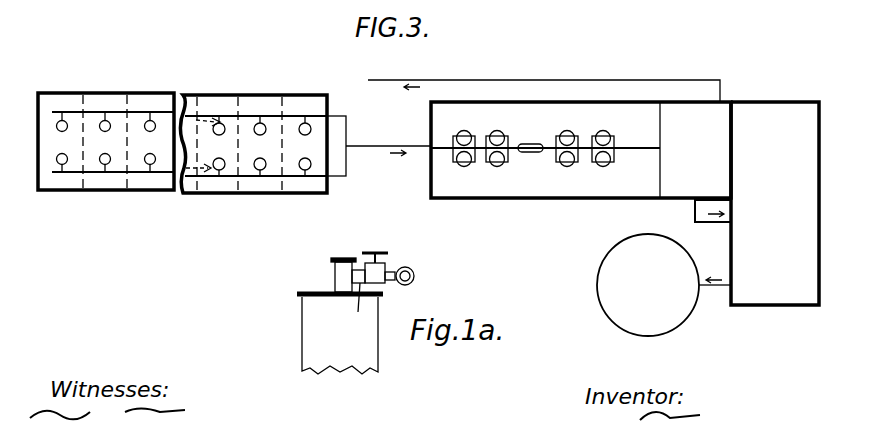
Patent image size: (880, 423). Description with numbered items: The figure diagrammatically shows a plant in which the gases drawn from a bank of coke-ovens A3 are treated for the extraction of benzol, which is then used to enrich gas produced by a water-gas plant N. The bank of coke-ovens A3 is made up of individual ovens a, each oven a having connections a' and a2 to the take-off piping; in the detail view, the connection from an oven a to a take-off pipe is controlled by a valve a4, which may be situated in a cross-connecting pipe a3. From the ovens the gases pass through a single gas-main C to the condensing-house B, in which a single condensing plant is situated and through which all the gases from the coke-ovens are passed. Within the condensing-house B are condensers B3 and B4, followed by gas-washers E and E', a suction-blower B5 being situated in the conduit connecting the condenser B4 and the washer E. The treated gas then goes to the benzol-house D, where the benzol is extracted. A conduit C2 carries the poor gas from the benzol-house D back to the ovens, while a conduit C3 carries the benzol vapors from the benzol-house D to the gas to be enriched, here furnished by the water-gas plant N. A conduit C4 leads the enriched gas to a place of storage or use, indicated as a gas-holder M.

In FIG. 3, the oven a is at (111, 120).
In FIG. 1A, the oven a is at (330, 334).
In FIG. 3, the oven connection a' is at (48, 99).
In FIG. 1A, the oven connection a' is at (332, 275).
In FIG. 3, the oven connection a2 is at (57, 162).
In FIG. 1A, the cross-connecting pipe a3 is at (355, 307).
In FIG. 1A, the valve a4 is at (388, 258).
In FIG. 3, the bank of coke-ovens A3 is at (106, 131).
In FIG. 3, the condensing-house B is at (567, 150).
In FIG. 3, the condenser B3 is at (462, 132).
In FIG. 3, the condenser B4 is at (497, 132).
In FIG. 3, the suction-blower B5 is at (535, 140).
In FIG. 3, the gas-main C is at (382, 143).
In FIG. 1A, the gas-main C is at (414, 275).
In FIG. 3, the poor-gas conduit C2 is at (606, 80).
In FIG. 3, the benzol-vapor conduit C3 is at (710, 222).
In FIG. 3, the enriched-gas conduit C4 is at (720, 291).
In FIG. 3, the benzol-house D is at (679, 150).
In FIG. 3, the gas-washer E is at (567, 137).
In FIG. 3, the gas-washer E' is at (603, 137).
In FIG. 3, the gas-holder M is at (648, 285).
In FIG. 3, the water-gas plant N is at (775, 203).